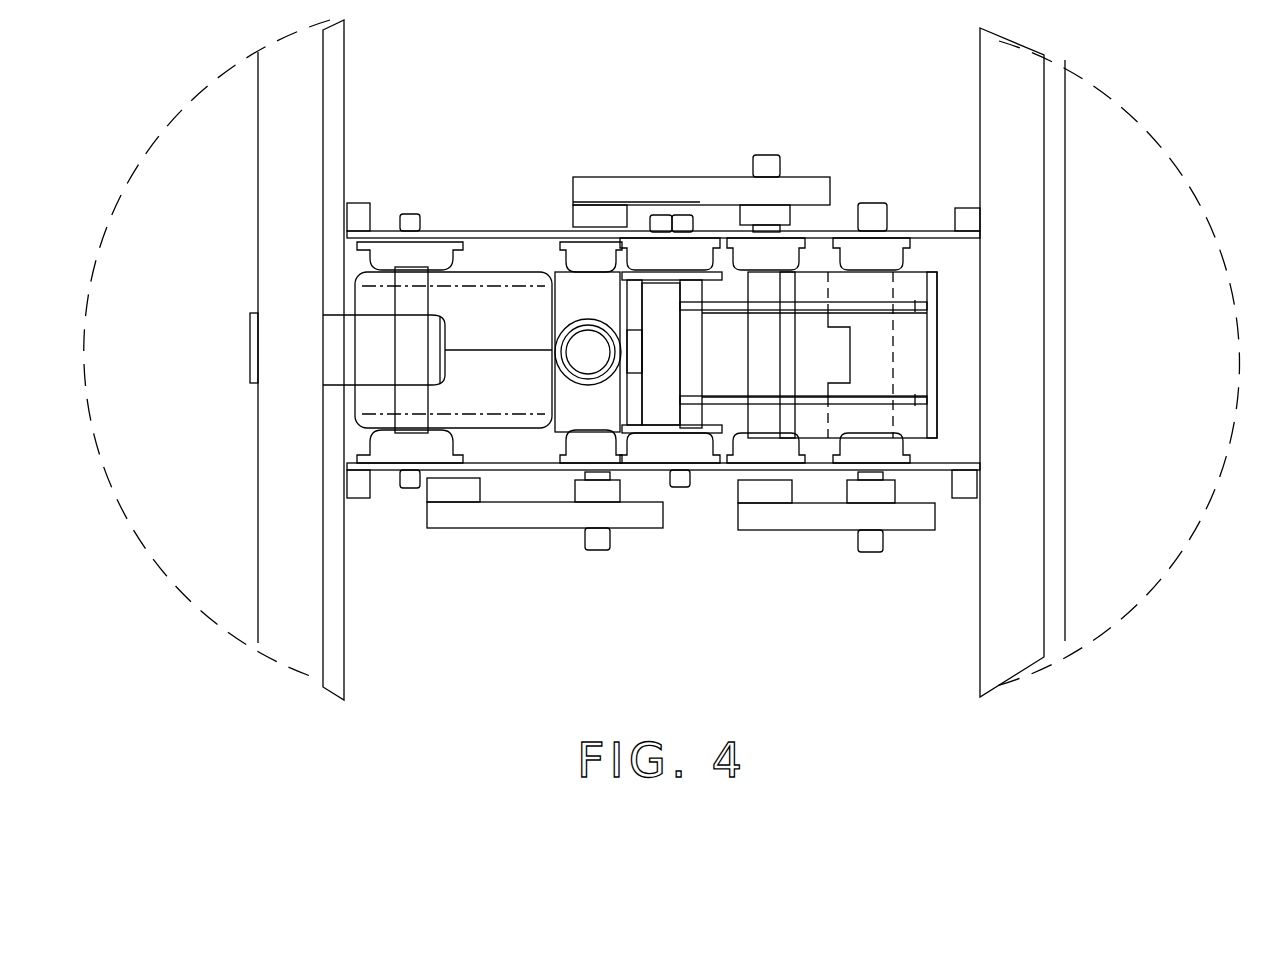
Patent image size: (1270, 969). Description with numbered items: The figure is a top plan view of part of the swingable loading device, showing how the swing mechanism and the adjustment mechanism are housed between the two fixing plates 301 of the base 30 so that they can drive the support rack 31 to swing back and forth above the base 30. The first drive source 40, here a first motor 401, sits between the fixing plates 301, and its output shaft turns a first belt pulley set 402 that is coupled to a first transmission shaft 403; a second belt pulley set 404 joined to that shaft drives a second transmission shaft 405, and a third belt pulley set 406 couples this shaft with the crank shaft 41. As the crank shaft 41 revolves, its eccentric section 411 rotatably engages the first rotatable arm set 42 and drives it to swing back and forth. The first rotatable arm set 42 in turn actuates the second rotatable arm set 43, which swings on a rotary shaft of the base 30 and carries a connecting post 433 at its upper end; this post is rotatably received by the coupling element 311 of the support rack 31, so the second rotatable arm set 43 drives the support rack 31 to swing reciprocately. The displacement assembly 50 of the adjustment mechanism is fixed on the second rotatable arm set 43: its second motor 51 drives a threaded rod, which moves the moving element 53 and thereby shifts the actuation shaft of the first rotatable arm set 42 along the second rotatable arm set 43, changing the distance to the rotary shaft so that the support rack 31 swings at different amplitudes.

The base 30 is at (1064, 609).
The fixing plates 301 is at (932, 231).
The support rack 31 is at (256, 571).
The coupling element 311 is at (382, 476).
The first drive source 40 is at (349, 284).
The first motor 401 is at (450, 297).
The first belt pulley set 402 is at (493, 532).
The first transmission shaft 403 is at (598, 545).
The second belt pulley set 404 is at (645, 178).
The second transmission shaft 405 is at (763, 167).
The third belt pulley set 406 is at (797, 533).
The crank shaft 41 is at (870, 553).
The eccentric section 411 is at (883, 363).
The first rotatable arm set 42 is at (790, 305).
The second rotatable arm set 43 is at (688, 277).
The connecting post 433 is at (650, 398).
The displacement assembly 50 is at (561, 314).
The second motor 51 is at (588, 337).
The moving element 53 is at (637, 340).